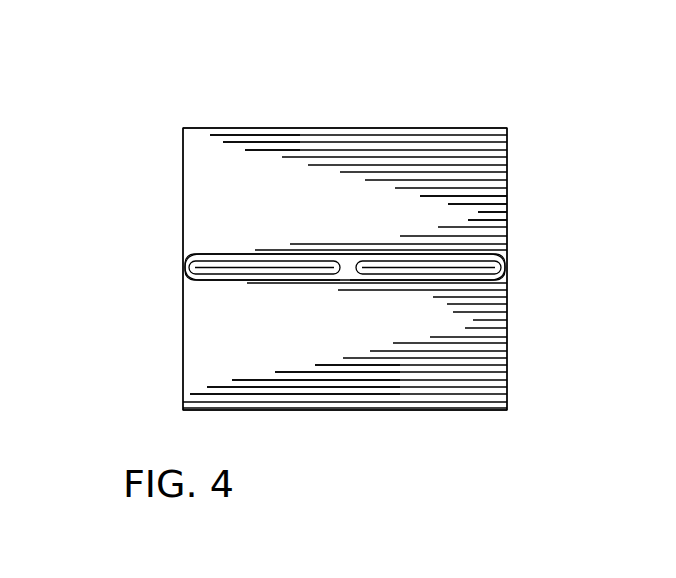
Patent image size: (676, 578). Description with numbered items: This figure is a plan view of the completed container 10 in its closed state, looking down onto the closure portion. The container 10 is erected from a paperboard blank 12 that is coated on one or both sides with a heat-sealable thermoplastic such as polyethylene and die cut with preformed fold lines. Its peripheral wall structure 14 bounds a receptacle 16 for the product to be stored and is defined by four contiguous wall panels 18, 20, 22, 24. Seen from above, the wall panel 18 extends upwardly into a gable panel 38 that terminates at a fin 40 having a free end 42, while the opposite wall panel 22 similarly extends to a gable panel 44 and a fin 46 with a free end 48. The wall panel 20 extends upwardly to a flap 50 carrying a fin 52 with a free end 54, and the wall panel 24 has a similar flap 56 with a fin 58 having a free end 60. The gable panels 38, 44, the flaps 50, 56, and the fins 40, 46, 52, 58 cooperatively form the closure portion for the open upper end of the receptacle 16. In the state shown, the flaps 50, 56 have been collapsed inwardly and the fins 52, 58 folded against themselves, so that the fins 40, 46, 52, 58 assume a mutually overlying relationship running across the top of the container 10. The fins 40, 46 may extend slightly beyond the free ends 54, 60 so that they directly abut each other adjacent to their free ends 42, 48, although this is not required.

The container 10 is at (385, 112).
The paperboard blank 12 is at (336, 128).
The peripheral wall structure 14 is at (180, 218).
The receptacle 16 is at (457, 218).
The wall panel 18 is at (297, 128).
The wall panel 20 is at (183, 365).
The wall panel 22 is at (455, 410).
The wall panel 24 is at (508, 348).
The gable panel 38 is at (270, 152).
The fin 40 is at (232, 255).
The free end 42 is at (260, 257).
The gable panel 44 is at (348, 390).
The fin 46 is at (393, 275).
The free end 48 is at (262, 279).
The flap 50 is at (212, 267).
The fin 52 is at (228, 272).
The free end 54 is at (280, 268).
The flap 56 is at (472, 267).
The fin 58 is at (383, 267).
The free end 60 is at (452, 270).